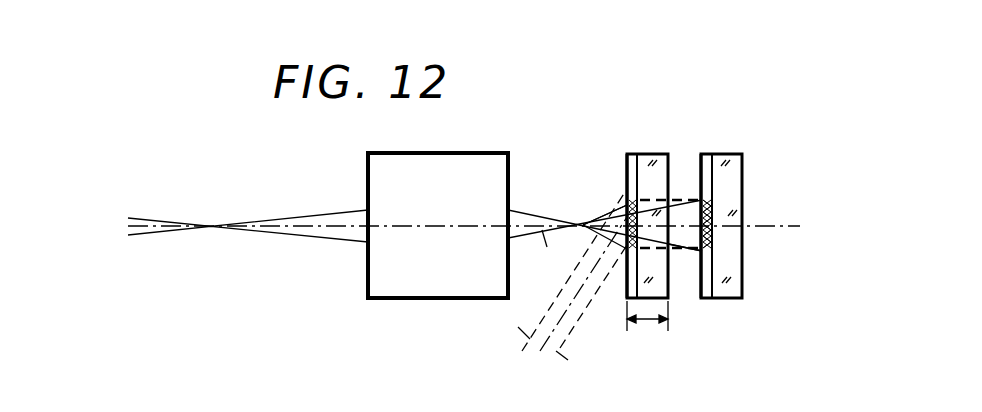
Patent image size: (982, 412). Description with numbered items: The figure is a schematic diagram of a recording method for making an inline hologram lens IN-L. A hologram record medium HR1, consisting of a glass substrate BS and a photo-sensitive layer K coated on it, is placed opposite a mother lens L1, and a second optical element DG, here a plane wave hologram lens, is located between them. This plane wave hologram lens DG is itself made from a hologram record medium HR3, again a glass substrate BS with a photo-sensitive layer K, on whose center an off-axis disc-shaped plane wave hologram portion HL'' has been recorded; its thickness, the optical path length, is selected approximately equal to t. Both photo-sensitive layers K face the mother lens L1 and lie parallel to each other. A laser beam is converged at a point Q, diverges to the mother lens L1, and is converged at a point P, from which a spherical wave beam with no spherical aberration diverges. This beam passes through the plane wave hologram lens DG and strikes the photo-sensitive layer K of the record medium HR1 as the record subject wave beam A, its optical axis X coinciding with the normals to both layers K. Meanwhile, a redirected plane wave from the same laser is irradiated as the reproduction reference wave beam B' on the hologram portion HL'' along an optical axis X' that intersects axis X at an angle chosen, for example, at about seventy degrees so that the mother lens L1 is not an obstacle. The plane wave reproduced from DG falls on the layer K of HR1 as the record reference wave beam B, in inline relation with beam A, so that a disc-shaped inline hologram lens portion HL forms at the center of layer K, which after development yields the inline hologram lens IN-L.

The convergence point Q is at (206, 222).
The mother lens L1 is at (367, 190).
The convergence point of mother lens P is at (581, 223).
The off-axis plane wave hologram portion HL'' is at (583, 171).
The optical axis X is at (464, 199).
The optical axis of reproduction reference wave beam X' is at (539, 274).
The reproduction reference wave beam B' is at (580, 322).
The hologram record medium HR3 is at (693, 102).
The hologram record medium HR1 is at (783, 88).
The photo-sensitive layer K is at (634, 154).
The glass substrate BS is at (662, 154).
The second optical element DG is at (626, 282).
The inline hologram lens IN-L is at (726, 299).
The inline hologram lens portion HL is at (755, 246).
The record reference wave beam B is at (670, 205).
The record subject wave beam A is at (683, 250).
The thickness of second optical element t is at (650, 322).